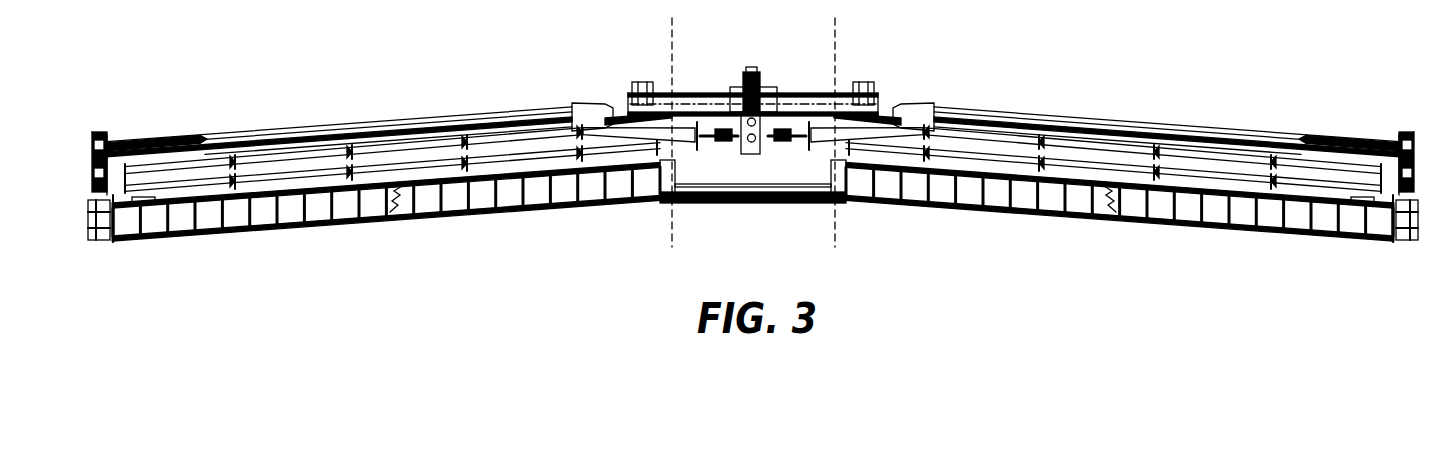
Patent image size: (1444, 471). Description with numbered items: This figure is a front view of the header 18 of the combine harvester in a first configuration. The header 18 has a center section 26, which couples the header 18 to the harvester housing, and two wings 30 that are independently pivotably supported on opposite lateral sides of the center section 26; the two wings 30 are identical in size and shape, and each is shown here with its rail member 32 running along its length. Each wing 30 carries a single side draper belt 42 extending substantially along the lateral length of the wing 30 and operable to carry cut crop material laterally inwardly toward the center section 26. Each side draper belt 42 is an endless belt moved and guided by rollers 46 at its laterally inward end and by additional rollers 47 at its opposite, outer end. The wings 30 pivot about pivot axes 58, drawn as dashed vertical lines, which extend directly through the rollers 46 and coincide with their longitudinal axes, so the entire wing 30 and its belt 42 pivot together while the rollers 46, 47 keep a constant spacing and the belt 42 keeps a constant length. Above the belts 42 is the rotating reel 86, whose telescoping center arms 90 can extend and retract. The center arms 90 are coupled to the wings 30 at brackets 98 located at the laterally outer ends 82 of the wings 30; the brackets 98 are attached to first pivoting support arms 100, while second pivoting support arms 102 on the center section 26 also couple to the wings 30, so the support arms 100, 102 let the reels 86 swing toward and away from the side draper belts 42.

The header 18 is at (233, 76).
The center section 26 is at (802, 82).
The wings 30 is at (438, 100).
The rail member 32 is at (330, 133).
The side draper belt 42 is at (318, 226).
The rollers 46 is at (667, 203).
The rollers 47 is at (118, 242).
The pivot axes 58 is at (668, 60).
The laterally outer end 82 is at (116, 206).
The reel 86 is at (388, 140).
The center arms 90 is at (530, 153).
The brackets 98 is at (92, 157).
The first pivoting support arms 100 is at (137, 135).
The second pivoting support arms 102 is at (738, 105).